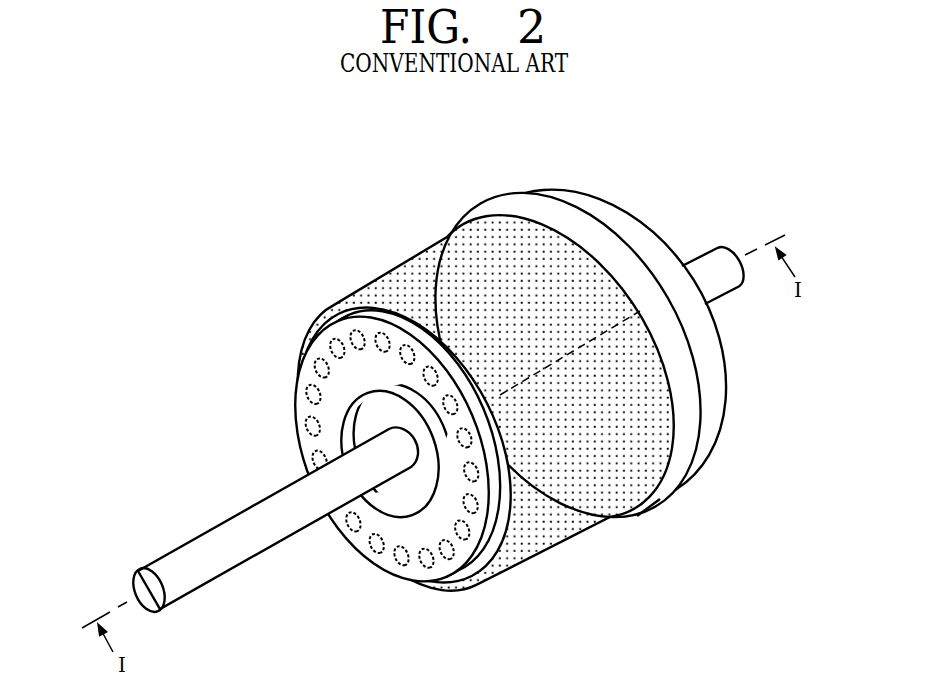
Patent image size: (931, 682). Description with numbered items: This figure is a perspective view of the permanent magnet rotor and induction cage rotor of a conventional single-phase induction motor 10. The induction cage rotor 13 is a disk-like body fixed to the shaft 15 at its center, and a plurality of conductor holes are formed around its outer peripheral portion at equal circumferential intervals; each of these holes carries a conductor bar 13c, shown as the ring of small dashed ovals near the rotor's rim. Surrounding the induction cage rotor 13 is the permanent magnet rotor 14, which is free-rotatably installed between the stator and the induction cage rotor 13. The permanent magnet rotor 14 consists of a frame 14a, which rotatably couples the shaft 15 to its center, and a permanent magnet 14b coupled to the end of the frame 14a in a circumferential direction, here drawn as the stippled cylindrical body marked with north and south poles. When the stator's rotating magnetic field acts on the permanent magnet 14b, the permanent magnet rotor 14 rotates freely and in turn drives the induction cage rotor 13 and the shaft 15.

The single-phase induction motor 10 is at (459, 376).
The induction cage rotor 13 is at (383, 453).
The conductor bar 13c is at (410, 557).
The permanent magnet rotor 14 is at (519, 372).
The frame 14a is at (508, 200).
The permanent magnet 14b is at (464, 413).
The shaft 15 is at (200, 543).